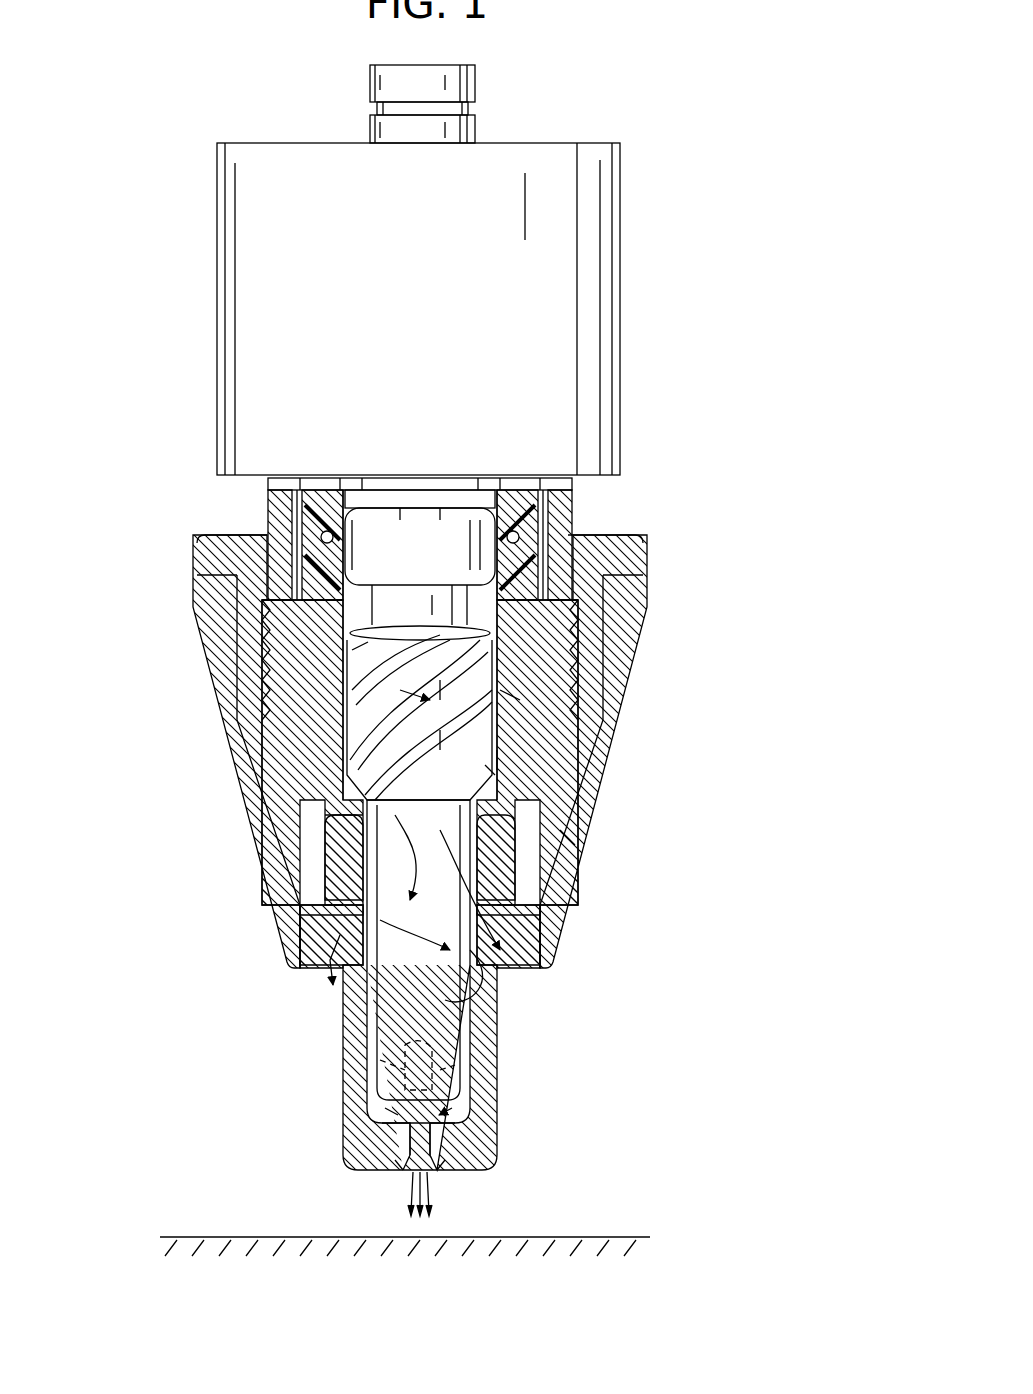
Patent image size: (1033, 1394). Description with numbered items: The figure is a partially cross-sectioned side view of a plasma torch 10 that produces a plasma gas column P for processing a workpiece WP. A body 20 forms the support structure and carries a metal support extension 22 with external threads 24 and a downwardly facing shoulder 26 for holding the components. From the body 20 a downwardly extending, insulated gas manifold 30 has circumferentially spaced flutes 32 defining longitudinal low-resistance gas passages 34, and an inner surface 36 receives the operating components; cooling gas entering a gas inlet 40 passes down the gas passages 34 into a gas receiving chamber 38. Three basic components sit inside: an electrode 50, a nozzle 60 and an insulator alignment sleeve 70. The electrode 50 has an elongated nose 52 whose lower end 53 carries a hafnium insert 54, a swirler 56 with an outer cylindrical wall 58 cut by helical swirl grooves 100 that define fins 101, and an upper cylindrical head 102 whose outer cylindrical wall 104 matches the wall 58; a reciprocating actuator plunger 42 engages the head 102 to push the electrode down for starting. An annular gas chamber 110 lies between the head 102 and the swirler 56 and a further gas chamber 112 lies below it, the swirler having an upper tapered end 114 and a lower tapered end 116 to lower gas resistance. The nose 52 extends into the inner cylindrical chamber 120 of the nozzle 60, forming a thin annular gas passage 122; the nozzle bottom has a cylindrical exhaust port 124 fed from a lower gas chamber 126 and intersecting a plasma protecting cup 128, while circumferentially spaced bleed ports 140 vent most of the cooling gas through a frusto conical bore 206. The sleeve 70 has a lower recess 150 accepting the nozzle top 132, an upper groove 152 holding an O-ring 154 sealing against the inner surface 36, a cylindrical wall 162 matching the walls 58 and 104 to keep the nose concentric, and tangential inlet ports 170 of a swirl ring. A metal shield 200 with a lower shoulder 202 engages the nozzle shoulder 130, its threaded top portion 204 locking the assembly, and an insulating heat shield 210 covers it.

The plasma torch 10 is at (724, 370).
The body 20 is at (608, 280).
The metal support extension 22 is at (565, 503).
The external threads 24 is at (565, 650).
The downwardly facing shoulder 26 is at (540, 725).
The insulated gas manifold 30 is at (288, 515).
The flutes 32 is at (568, 530).
The gas passages 34 is at (295, 555).
The inner surface 36 is at (515, 510).
The gas receiving chamber 38 is at (290, 603).
The gas inlet 40 is at (478, 80).
The reciprocating actuator plunger 42 is at (385, 495).
The electrode 50 is at (470, 1060).
The elongated nose 52 is at (380, 1052).
The lower end 53 is at (450, 1115).
The insert 54 is at (380, 1080).
The swirler 56 is at (540, 695).
The outer cylindrical wall 58 is at (500, 760).
The nozzle 60 is at (340, 1105).
The insulator alignment sleeve 70 is at (300, 862).
The helical swirl grooves 100 is at (370, 712).
The fins 101 is at (418, 695).
The upper cylindrical head 102 is at (460, 510).
The outer cylindrical wall 104 is at (393, 530).
The annular gas chamber 110 is at (480, 587).
The gas chamber 112 is at (490, 800).
The upper tapered end 114 is at (370, 645).
The lower tapered end 116 is at (322, 818).
The inner cylindrical chamber 120 is at (470, 1033).
The thin annular gas passage 122 is at (470, 1005).
The cylindrical exhaust port 124 is at (420, 1135).
The lower gas chamber 126 is at (400, 1122).
The plasma protecting cup 128 is at (390, 1170).
The shoulder 130 is at (325, 910).
The top 132 is at (325, 835).
The bleed ports 140 is at (485, 945).
The lower recess 150 is at (503, 850).
The upper groove 152 is at (323, 525).
The O-ring 154 is at (290, 510).
The cylindrical wall 162 is at (495, 770).
The tangential inlet ports 170 is at (355, 620).
The metal shield 200 is at (545, 900).
The lower shoulder 202 is at (320, 905).
The threaded top portion 204 is at (588, 660).
The frusto conical bore 206 is at (303, 983).
The heat shield 210 is at (577, 840).
The plasma gas column P is at (430, 1200).
The workpiece WP is at (645, 1235).